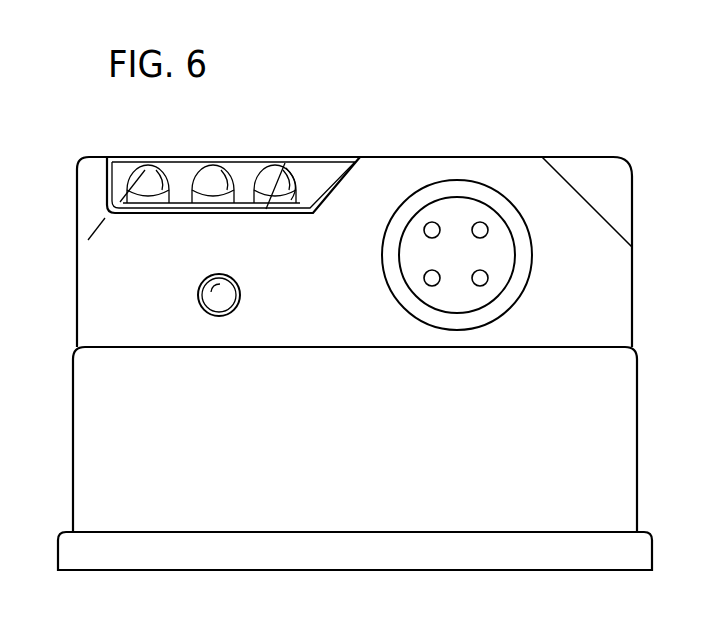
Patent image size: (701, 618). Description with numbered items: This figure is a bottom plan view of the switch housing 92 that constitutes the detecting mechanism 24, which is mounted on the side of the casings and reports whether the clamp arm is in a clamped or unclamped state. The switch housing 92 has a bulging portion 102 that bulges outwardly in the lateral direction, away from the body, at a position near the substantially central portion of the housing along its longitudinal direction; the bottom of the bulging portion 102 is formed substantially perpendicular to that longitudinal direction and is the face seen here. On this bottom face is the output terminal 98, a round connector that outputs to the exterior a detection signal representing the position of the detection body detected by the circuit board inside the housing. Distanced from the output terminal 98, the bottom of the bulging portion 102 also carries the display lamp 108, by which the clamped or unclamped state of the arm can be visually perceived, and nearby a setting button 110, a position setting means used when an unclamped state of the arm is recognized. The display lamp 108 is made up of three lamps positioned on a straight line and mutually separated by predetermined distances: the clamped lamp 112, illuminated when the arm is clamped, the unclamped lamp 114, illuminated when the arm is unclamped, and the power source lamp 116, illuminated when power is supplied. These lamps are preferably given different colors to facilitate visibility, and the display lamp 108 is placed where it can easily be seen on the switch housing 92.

The detecting mechanism 24 is at (340, 334).
The switch housing 92 is at (85, 402).
The output terminal 98 is at (493, 267).
The bulging portion 102 is at (394, 167).
The display lamp 108 is at (262, 150).
The setting button 110 is at (217, 296).
The clamped lamp 112 is at (288, 195).
The unclamped lamp 114 is at (158, 193).
The power source lamp 116 is at (216, 193).